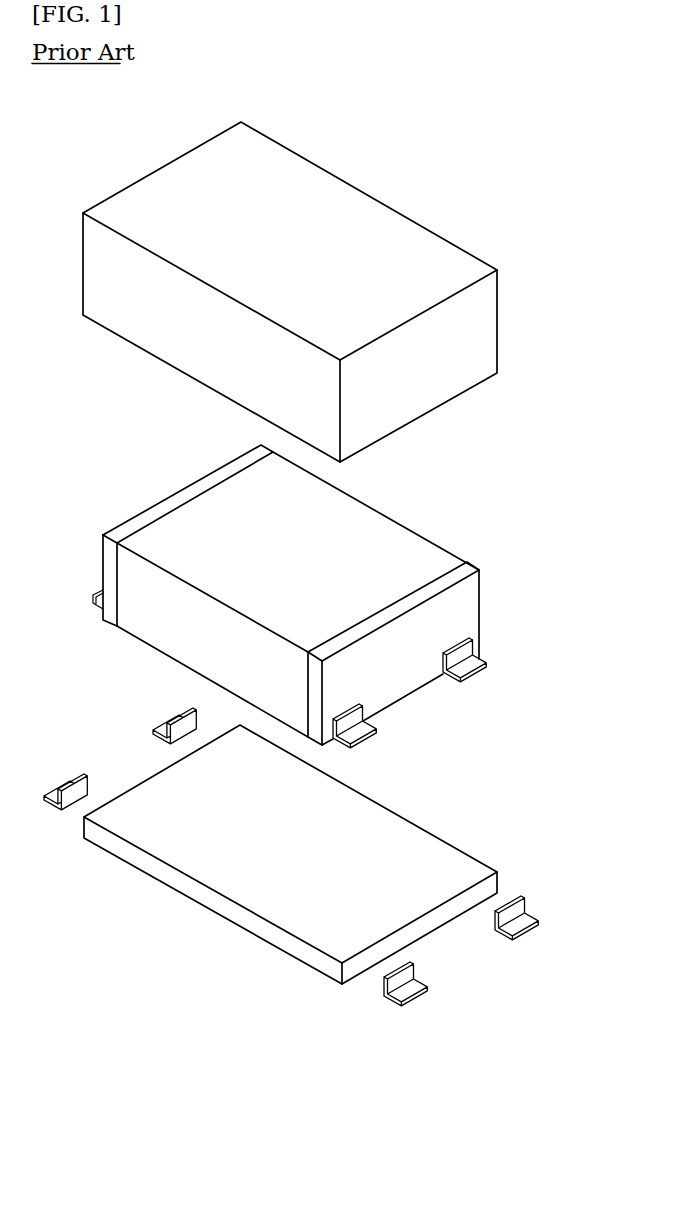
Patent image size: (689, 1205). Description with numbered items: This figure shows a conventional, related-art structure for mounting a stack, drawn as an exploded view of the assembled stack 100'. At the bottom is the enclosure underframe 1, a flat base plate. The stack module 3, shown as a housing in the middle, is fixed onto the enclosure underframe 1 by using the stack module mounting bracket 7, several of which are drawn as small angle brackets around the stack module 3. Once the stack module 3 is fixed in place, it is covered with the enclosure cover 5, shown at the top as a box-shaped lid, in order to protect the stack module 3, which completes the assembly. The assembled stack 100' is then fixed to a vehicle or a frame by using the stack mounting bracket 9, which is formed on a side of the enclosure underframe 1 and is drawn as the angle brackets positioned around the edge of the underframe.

The assembled stack 100' is at (306, 544).
The enclosure underframe 1 is at (248, 922).
The stack module 3 is at (188, 520).
The enclosure cover 5 is at (341, 200).
The stack module mounting bracket 7 is at (467, 668).
The stack mounting bracket 9 is at (522, 923).